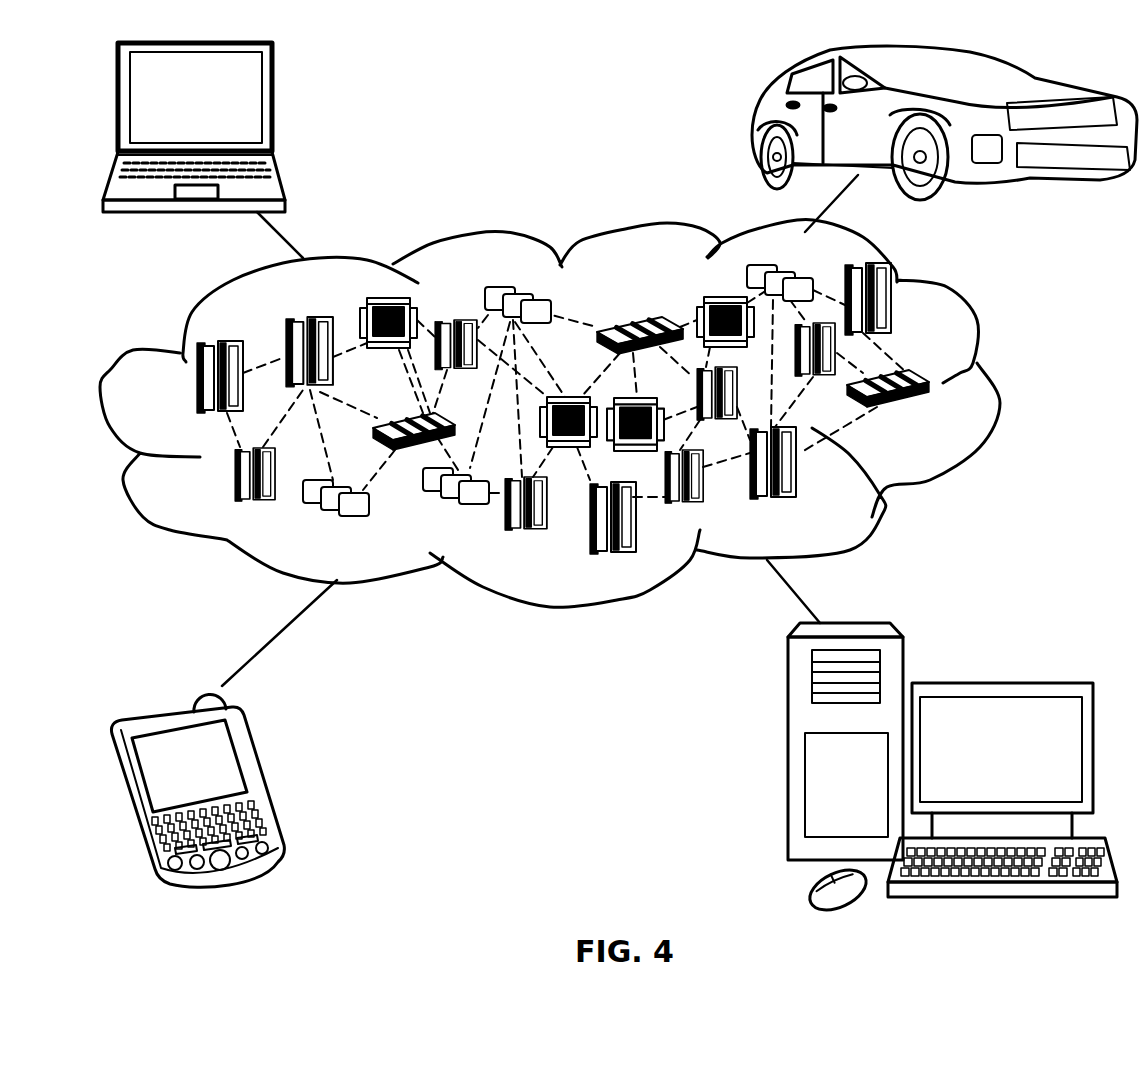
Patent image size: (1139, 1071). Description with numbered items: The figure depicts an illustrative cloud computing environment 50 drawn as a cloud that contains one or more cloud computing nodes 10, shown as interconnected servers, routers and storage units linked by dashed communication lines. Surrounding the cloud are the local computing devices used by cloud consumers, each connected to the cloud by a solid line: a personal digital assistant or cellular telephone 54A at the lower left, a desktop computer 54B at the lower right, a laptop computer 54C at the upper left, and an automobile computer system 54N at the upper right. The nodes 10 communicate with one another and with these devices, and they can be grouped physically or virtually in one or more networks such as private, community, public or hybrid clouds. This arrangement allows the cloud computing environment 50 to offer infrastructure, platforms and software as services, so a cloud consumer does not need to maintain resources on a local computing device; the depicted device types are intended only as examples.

The cloud computing node 10 is at (950, 418).
The cloud computing environment 50 is at (993, 387).
The personal digital assistant (PDA) or cellular telephone 54A is at (263, 778).
The desktop computer 54B is at (1000, 683).
The laptop computer 54C is at (272, 108).
The automobile computer system 54N is at (752, 122).